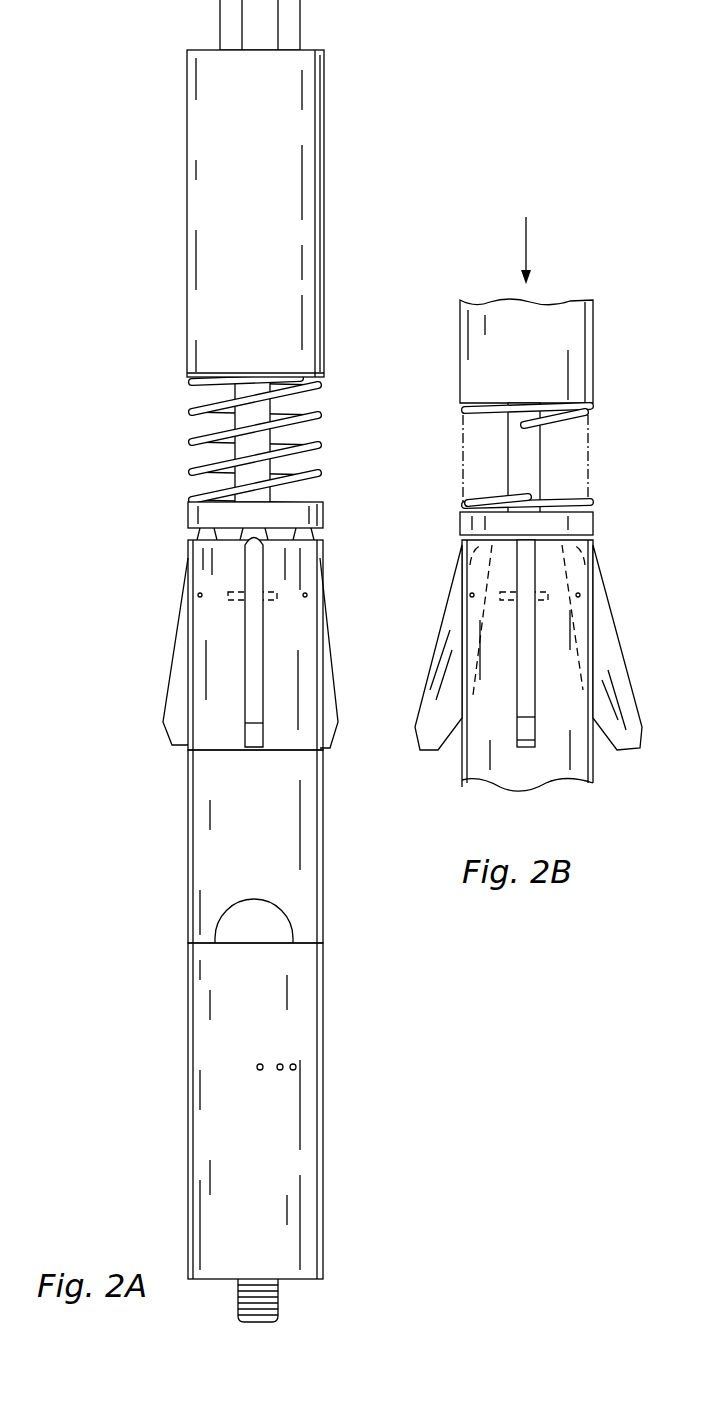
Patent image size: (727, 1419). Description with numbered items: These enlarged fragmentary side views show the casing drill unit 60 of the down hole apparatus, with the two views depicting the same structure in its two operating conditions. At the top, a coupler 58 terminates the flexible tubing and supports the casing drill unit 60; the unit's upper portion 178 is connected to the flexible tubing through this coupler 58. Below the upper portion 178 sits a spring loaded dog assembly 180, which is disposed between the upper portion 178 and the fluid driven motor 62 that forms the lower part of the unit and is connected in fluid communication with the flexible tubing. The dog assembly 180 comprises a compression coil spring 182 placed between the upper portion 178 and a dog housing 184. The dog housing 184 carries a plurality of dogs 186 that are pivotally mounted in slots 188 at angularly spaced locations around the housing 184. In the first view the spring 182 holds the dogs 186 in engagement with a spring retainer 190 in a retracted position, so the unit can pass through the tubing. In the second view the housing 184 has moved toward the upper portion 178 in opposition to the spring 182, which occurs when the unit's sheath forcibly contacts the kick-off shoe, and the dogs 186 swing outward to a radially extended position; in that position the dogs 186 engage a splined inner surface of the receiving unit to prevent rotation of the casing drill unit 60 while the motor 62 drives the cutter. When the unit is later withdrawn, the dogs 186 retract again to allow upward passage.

In FIG. 2A, the coupler 58 is at (300, 22).
In FIG. 2A, the casing drill unit 60 is at (330, 92).
In FIG. 2B, the casing drill unit 60 is at (593, 318).
In FIG. 2A, the upper portion 178 is at (318, 240).
In FIG. 2A, the compression coil spring 182 is at (322, 422).
In FIG. 2B, the compression coil spring 182 is at (590, 412).
In FIG. 2A, the spring retainer 190 is at (188, 510).
In FIG. 2B, the spring retainer 190 is at (593, 522).
In FIG. 2A, the spring loaded dog assembly 180 is at (323, 556).
In FIG. 2B, the spring loaded dog assembly 180 is at (595, 548).
In FIG. 2A, the slots 188 is at (246, 676).
In FIG. 2B, the slots 188 is at (537, 674).
In FIG. 2A, the dogs 186 is at (338, 723).
In FIG. 2B, the dogs 186 is at (633, 695).
In FIG. 2A, the dog housing 184 is at (323, 843).
In FIG. 2B, the dog housing 184 is at (593, 780).
In FIG. 2A, the fluid driven motor 62 is at (323, 978).